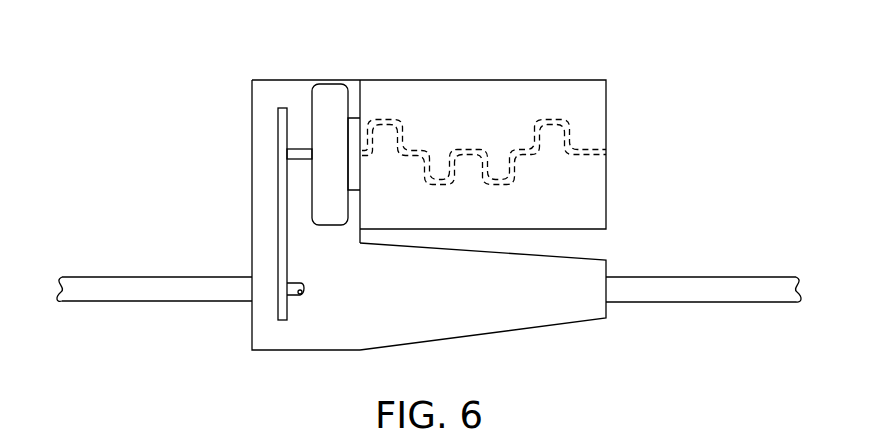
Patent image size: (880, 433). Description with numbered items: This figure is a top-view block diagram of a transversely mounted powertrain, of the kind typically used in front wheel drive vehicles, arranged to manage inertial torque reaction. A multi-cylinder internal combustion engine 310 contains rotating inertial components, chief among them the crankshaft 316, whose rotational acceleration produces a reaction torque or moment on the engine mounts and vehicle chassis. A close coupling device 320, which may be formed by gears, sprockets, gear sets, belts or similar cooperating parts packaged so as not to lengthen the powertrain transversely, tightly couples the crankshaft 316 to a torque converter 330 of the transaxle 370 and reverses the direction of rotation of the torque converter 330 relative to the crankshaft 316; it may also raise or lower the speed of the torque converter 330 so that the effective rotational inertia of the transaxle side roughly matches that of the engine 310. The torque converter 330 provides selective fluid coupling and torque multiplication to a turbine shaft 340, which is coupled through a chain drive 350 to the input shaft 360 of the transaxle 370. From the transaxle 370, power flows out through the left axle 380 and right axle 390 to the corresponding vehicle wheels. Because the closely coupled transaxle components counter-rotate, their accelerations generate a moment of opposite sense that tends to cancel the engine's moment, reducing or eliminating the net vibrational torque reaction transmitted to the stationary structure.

The internal combustion engine 310 is at (591, 185).
The crankshaft 316 is at (551, 121).
The close coupling device 320 is at (353, 118).
The torque converter 330 is at (332, 95).
The turbine shaft 340 is at (300, 153).
The chain drive 350 is at (280, 203).
The input shaft 360 is at (293, 290).
The transaxle 370 is at (448, 324).
The left axle 380 is at (103, 287).
The right axle 390 is at (745, 287).